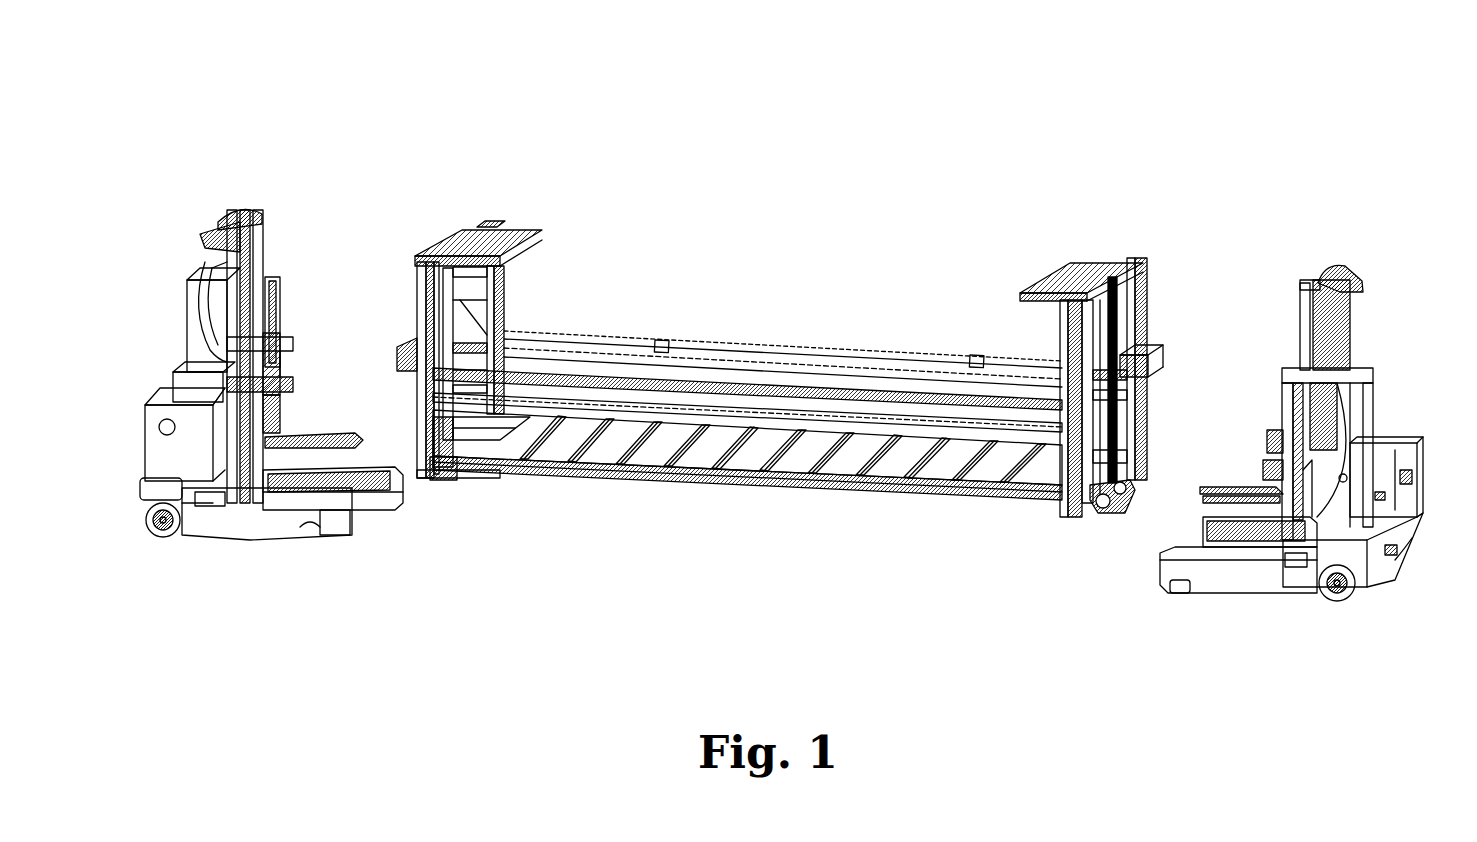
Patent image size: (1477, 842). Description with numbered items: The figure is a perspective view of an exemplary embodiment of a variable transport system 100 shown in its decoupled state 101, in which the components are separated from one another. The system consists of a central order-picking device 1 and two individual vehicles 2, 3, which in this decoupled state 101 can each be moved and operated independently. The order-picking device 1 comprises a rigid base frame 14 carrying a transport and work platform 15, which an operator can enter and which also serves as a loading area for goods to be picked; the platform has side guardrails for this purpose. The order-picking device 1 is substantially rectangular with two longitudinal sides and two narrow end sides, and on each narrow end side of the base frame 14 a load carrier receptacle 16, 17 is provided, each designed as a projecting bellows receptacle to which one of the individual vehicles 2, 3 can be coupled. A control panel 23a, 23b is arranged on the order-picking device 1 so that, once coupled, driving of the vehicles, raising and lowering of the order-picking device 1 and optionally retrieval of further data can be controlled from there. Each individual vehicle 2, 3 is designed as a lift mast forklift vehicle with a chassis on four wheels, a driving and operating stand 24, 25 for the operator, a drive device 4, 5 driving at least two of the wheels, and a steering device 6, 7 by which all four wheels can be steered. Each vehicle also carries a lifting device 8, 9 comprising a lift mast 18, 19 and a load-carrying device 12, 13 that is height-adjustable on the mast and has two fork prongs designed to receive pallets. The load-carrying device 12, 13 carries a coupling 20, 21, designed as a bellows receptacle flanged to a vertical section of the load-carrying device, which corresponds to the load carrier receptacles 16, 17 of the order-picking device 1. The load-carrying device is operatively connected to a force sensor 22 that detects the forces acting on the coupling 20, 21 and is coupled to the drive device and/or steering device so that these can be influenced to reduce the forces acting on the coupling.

The variable transport system 100 is at (468, 132).
The decoupled state 101 is at (579, 139).
The order-picking device 1 is at (741, 212).
The individual vehicle 2 is at (174, 266).
The individual vehicle 3 is at (1405, 298).
The drive device 4 is at (158, 458).
The drive device 5 is at (1418, 440).
The steering device 6 is at (166, 520).
The steering device 7 is at (1365, 573).
The lifting device 8 is at (336, 354).
The lifting device 9 is at (1276, 352).
The load-carrying device 12 is at (300, 430).
The load-carrying device 13 is at (1207, 484).
The base frame 14 is at (541, 470).
The transport and work platform 15 is at (885, 375).
The load carrier receptacle 16 is at (422, 447).
The load carrier receptacle 17 is at (1122, 538).
The lift mast 18 is at (256, 236).
The lift mast 19 is at (1300, 284).
The coupling 20 is at (251, 423).
The coupling 21 is at (1260, 468).
The force sensor 22 is at (354, 433).
The control panel 23a is at (398, 335).
The control panel 23b is at (1161, 322).
The driving and operating stand 24 is at (282, 278).
The driving and operating stand 25 is at (1317, 480).